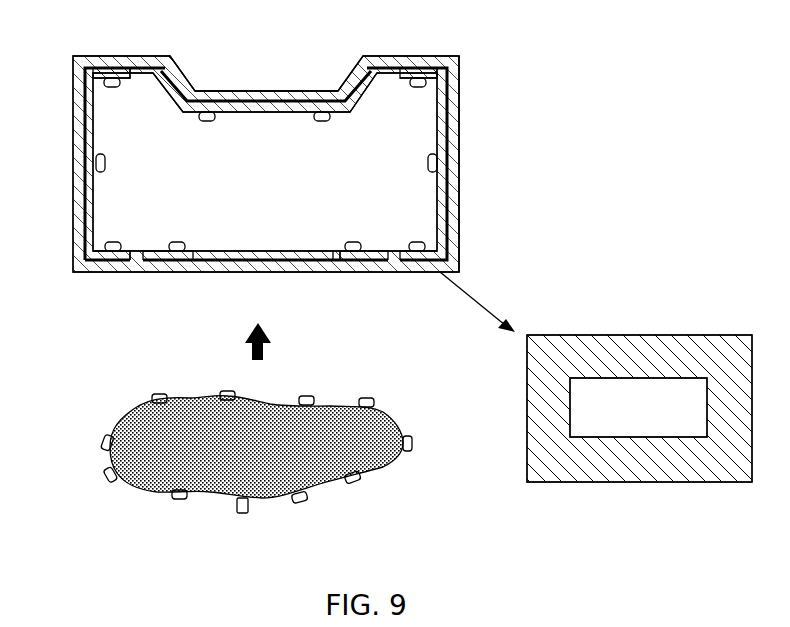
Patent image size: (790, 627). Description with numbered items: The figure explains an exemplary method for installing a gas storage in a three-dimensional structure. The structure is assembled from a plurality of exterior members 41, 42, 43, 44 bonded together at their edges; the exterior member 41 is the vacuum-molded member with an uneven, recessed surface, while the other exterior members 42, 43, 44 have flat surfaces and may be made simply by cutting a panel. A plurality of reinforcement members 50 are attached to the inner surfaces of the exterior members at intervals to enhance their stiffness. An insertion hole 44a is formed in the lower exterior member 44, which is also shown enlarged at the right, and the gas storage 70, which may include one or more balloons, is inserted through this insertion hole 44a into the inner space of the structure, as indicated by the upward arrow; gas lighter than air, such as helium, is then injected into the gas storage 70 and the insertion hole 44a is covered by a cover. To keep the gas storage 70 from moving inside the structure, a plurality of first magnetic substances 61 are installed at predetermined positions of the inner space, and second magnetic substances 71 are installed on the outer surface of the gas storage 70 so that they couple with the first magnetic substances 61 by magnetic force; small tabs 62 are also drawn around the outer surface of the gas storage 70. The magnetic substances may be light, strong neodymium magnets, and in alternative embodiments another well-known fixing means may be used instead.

The exterior member 41 is at (270, 93).
The exterior member 42 is at (73, 118).
The exterior member 43 is at (460, 133).
The lower exterior member 44 is at (399, 268).
The insertion hole 44a is at (333, 268).
The reinforcement member 50 is at (160, 264).
The first magnetic substance 61 is at (206, 111).
The fixing tab 62 is at (153, 393).
The gas storage 70 is at (125, 412).
The second magnetic substance 71 is at (242, 515).